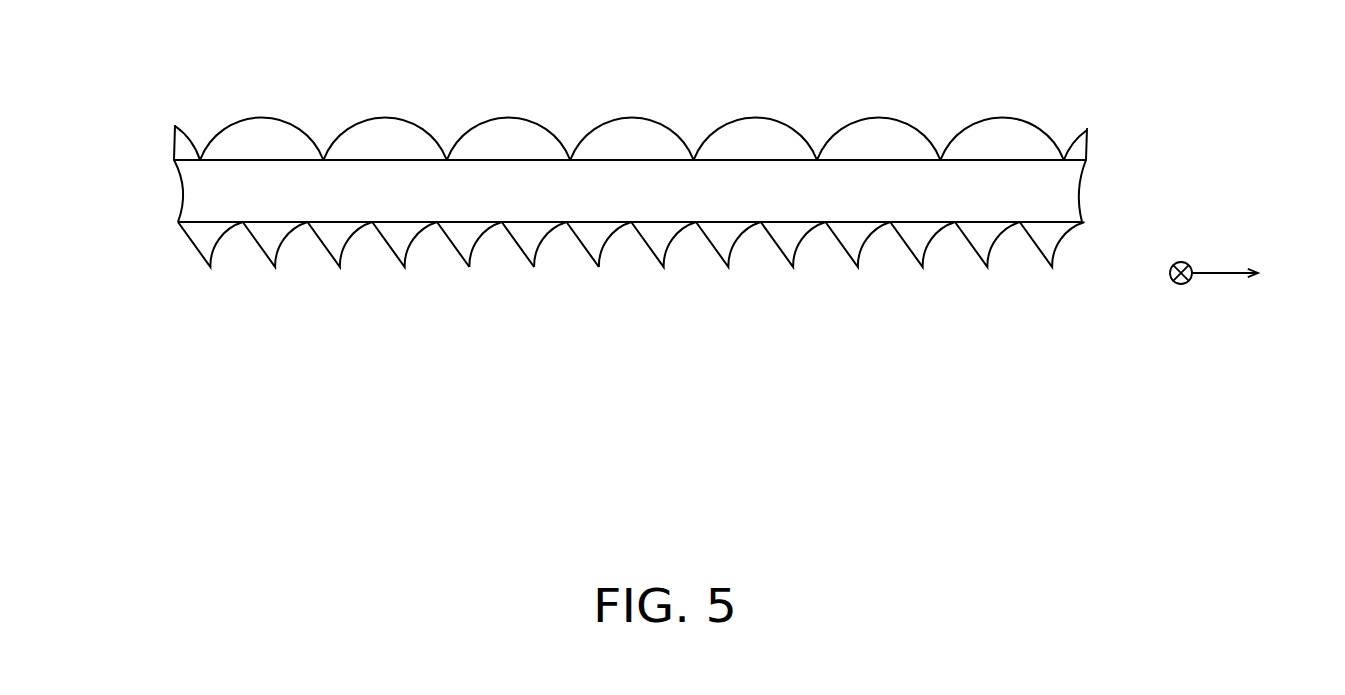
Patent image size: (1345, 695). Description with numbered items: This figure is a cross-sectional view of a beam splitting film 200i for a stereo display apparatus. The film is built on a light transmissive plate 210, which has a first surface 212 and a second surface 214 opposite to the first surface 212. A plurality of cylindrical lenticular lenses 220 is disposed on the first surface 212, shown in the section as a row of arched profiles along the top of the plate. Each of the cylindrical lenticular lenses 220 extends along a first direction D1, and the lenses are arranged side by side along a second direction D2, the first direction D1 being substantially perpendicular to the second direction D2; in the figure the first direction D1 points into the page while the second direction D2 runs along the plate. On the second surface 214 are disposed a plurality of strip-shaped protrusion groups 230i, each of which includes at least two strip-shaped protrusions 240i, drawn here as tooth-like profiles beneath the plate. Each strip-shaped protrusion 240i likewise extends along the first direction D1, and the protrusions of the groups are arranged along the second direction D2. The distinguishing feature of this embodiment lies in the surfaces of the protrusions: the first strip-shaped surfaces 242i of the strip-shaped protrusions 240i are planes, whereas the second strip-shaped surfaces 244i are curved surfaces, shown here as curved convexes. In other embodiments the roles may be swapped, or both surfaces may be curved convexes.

The beam splitting film 200i is at (671, 282).
The light transmissive plate 210 is at (663, 220).
The first surface 212 is at (1038, 158).
The second surface 214 is at (852, 225).
The cylindrical lenticular lenses 220 is at (983, 128).
The strip-shaped protrusion groups 230i is at (234, 313).
The strip-shaped protrusions 240i is at (278, 349).
The first strip-shaped surfaces 242i is at (522, 252).
The second strip-shaped surfaces 244i is at (623, 250).
The first direction D1 is at (1180, 283).
The second direction D2 is at (1234, 274).